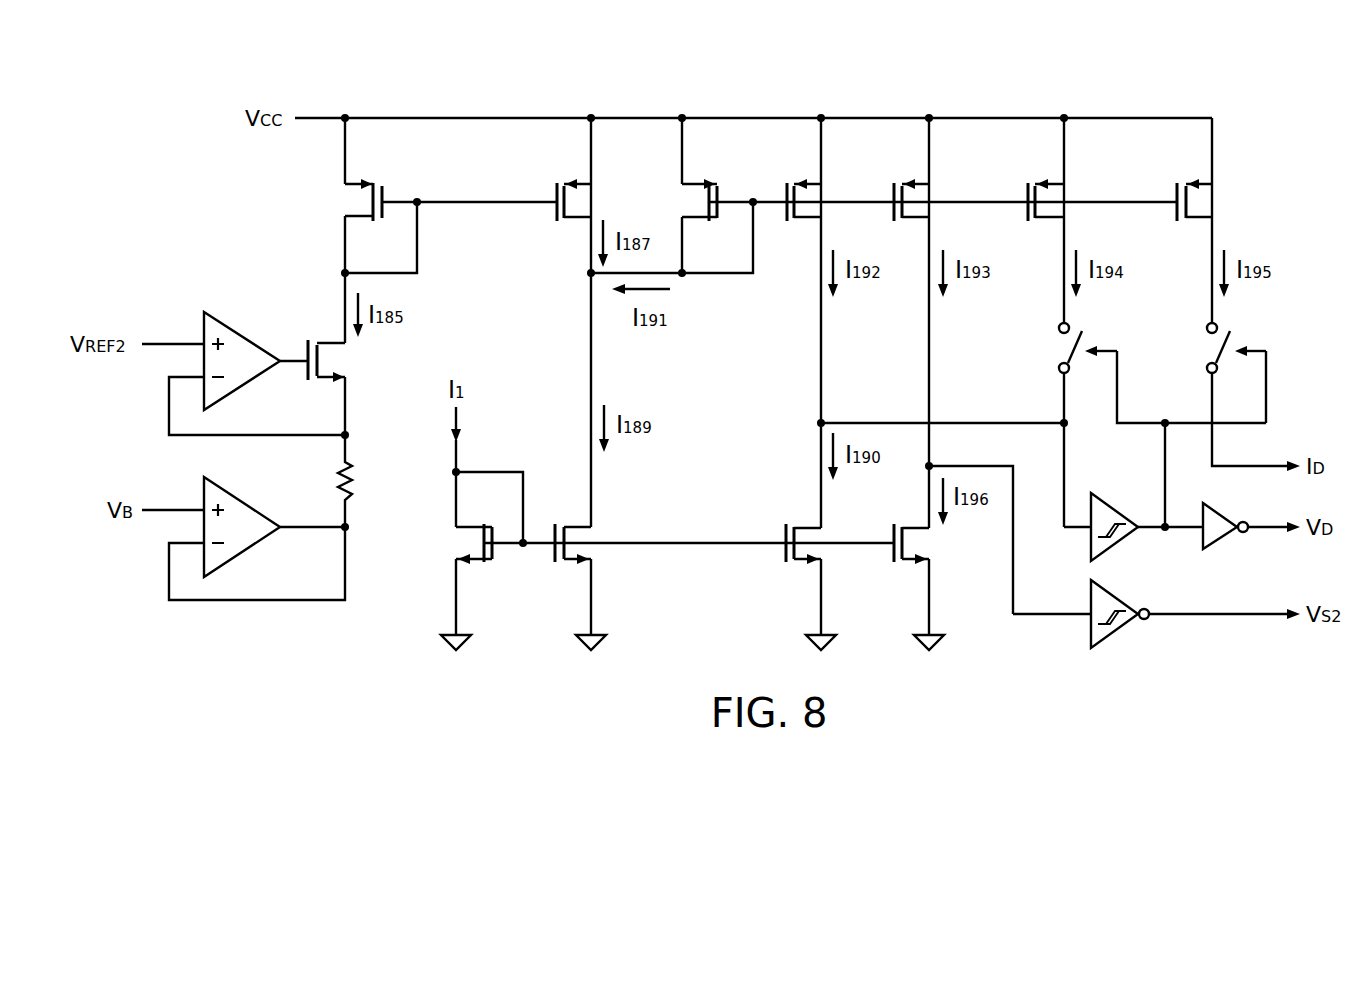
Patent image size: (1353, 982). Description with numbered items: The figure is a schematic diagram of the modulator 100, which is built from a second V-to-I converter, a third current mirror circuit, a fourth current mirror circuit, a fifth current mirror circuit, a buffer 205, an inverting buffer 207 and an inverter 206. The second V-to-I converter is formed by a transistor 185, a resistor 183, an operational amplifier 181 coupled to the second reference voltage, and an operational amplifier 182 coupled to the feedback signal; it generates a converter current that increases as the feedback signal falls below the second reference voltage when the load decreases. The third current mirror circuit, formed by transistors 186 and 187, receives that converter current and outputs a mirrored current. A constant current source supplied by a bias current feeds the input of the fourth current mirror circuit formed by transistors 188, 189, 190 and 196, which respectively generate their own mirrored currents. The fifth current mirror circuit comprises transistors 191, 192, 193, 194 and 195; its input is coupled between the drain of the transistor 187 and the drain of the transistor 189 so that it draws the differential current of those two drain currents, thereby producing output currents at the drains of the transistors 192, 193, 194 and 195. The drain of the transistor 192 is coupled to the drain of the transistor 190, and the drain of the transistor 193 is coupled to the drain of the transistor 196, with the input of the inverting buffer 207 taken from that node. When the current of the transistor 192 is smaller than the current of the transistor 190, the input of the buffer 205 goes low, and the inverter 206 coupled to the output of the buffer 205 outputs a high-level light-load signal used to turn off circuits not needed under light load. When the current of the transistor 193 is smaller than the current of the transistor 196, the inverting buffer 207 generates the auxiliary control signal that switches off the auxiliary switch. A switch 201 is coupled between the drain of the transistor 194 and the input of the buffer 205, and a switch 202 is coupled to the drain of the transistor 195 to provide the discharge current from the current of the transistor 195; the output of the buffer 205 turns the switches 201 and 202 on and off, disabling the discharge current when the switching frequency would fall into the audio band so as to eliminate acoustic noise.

The modulator 100 is at (1270, 80).
The operational amplifier 181 is at (249, 335).
The operational amplifier 182 is at (251, 500).
The resistor 183 is at (355, 478).
The transistor 185 is at (350, 352).
The transistor 186 is at (385, 181).
The transistor 187 is at (552, 233).
The transistor 188 is at (455, 549).
The transistor 189 is at (600, 553).
The transistor 190 is at (783, 524).
The transistor 191 is at (725, 187).
The transistor 192 is at (833, 188).
The transistor 193 is at (942, 188).
The transistor 194 is at (1075, 188).
The transistor 195 is at (1212, 202).
The transistor 196 is at (891, 524).
The switch 201 is at (1050, 350).
The switch 202 is at (1200, 350).
The buffer 205 is at (1111, 503).
The inverter 206 is at (1222, 545).
The inverting buffer 207 is at (1120, 634).